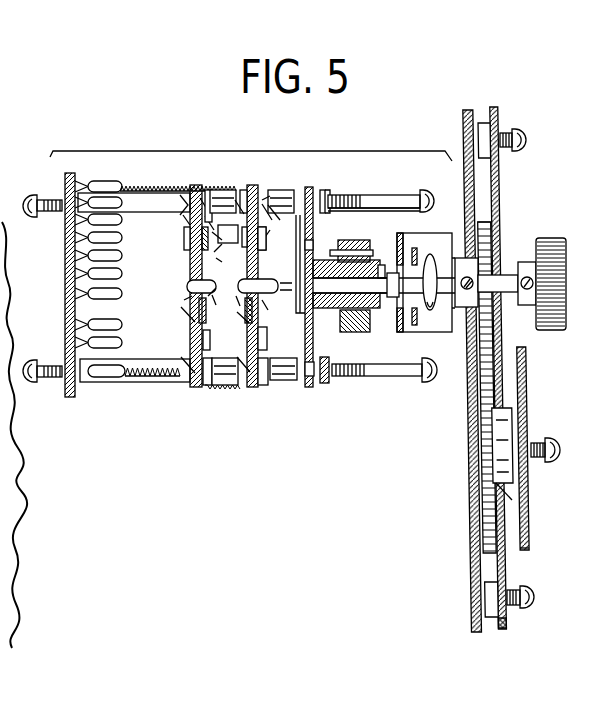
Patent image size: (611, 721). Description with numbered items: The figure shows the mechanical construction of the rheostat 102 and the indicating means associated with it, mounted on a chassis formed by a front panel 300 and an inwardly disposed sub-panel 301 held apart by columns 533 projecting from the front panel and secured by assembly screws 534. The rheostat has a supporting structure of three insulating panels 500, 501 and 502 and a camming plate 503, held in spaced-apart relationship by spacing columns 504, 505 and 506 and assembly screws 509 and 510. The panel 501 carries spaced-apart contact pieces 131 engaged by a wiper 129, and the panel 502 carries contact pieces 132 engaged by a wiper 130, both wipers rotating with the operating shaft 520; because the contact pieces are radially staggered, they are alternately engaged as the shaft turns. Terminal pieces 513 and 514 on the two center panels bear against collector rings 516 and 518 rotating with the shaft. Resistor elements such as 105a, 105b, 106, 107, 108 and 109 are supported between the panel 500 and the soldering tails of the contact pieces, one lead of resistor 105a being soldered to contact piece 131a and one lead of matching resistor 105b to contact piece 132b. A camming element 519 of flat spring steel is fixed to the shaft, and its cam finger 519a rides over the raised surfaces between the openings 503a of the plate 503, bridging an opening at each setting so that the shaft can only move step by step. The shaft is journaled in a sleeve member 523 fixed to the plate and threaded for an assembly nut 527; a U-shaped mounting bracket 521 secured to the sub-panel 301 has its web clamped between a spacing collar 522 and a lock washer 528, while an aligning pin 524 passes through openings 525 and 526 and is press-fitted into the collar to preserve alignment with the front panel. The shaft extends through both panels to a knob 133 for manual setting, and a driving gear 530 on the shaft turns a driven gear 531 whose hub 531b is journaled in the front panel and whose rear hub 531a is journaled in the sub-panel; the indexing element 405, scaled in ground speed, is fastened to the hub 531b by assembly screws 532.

The rheostat 102 is at (217, 151).
The resistor element 105a is at (78, 188).
The matching resistor element 105b is at (88, 182).
The resistor element 106 is at (76, 232).
The resistor element 107 is at (76, 262).
The resistor element 108 is at (76, 296).
The resistor element 109 is at (76, 328).
The wiper 129 is at (183, 311).
The wiper 130 is at (227, 293).
The contact pieces 131 is at (186, 296).
The contact piece 131a is at (192, 216).
The contact pieces 132 is at (225, 274).
The contact piece 132b is at (288, 192).
The knob 133 is at (539, 240).
The front panel 300 is at (501, 624).
The sub-panel 301 is at (472, 575).
The indexing element 405 is at (526, 486).
The panel 500 is at (77, 398).
The panel 501 is at (196, 388).
The panel 502 is at (256, 388).
The camming plate 503 is at (312, 386).
The openings 503a is at (368, 262).
The spacing column 504 is at (182, 188).
The spacing column 505 is at (228, 190).
The spacing column 506 is at (290, 190).
The assembly screw 509 is at (412, 200).
The assembly screw 510 is at (31, 384).
The terminal piece 513 is at (230, 240).
The terminal piece 514 is at (275, 252).
The collector ring 516 is at (221, 342).
The collector ring 518 is at (277, 295).
The camming element 519 is at (277, 341).
The cam finger 519a is at (331, 194).
The operating shaft 520 is at (397, 282).
The mounting bracket 521 is at (453, 340).
The spacing collar 522 is at (360, 322).
The sleeve member 523 is at (379, 294).
The aligning pin 524 is at (412, 195).
The opening 525 is at (349, 248).
The opening 526 is at (414, 237).
The assembly nut 527 is at (430, 256).
The lock washer 528 is at (444, 322).
The driving gear 530 is at (481, 223).
The driven gear 531 is at (480, 366).
The rearwardly disposed hub 531a is at (486, 449).
The hub 531b is at (529, 524).
The assembly screws 532 is at (544, 442).
The columns 533 is at (483, 122).
The screw 534 is at (505, 133).